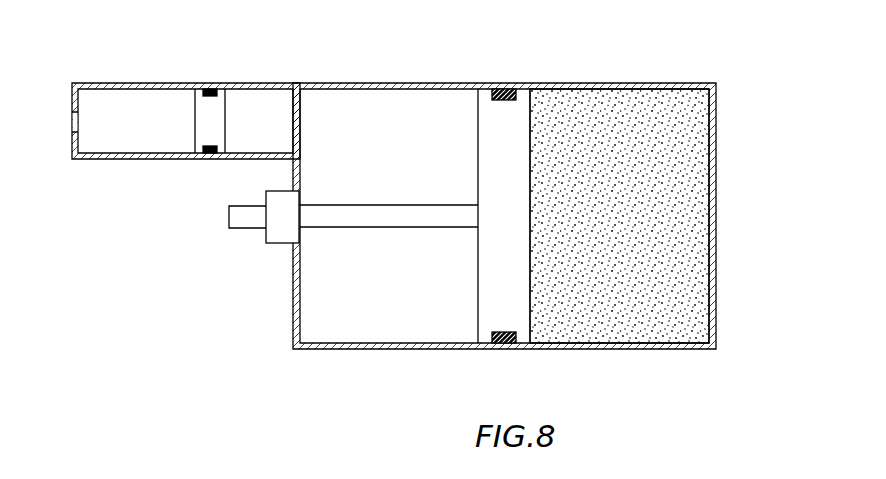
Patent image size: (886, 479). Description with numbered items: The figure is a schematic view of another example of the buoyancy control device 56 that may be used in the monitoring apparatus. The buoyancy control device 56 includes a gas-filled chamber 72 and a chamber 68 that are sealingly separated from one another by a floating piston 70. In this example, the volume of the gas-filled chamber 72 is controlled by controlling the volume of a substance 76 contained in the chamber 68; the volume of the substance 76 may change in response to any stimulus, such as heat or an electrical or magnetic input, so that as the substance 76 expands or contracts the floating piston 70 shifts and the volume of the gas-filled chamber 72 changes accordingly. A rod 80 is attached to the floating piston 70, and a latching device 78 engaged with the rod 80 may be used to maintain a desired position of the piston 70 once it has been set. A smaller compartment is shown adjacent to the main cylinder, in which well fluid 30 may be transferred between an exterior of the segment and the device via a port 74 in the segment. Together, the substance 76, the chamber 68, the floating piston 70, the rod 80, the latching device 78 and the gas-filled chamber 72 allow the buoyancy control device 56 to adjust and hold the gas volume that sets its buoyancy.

The buoyancy control device 56 is at (781, 72).
The gas-filled chamber 72 is at (332, 89).
The well fluid 30 is at (145, 138).
The port 74 is at (70, 122).
The floating piston 70 is at (226, 100).
The chamber 68 is at (578, 97).
The substance 76 is at (598, 328).
The latching device 78 is at (276, 246).
The rod 80 is at (238, 229).